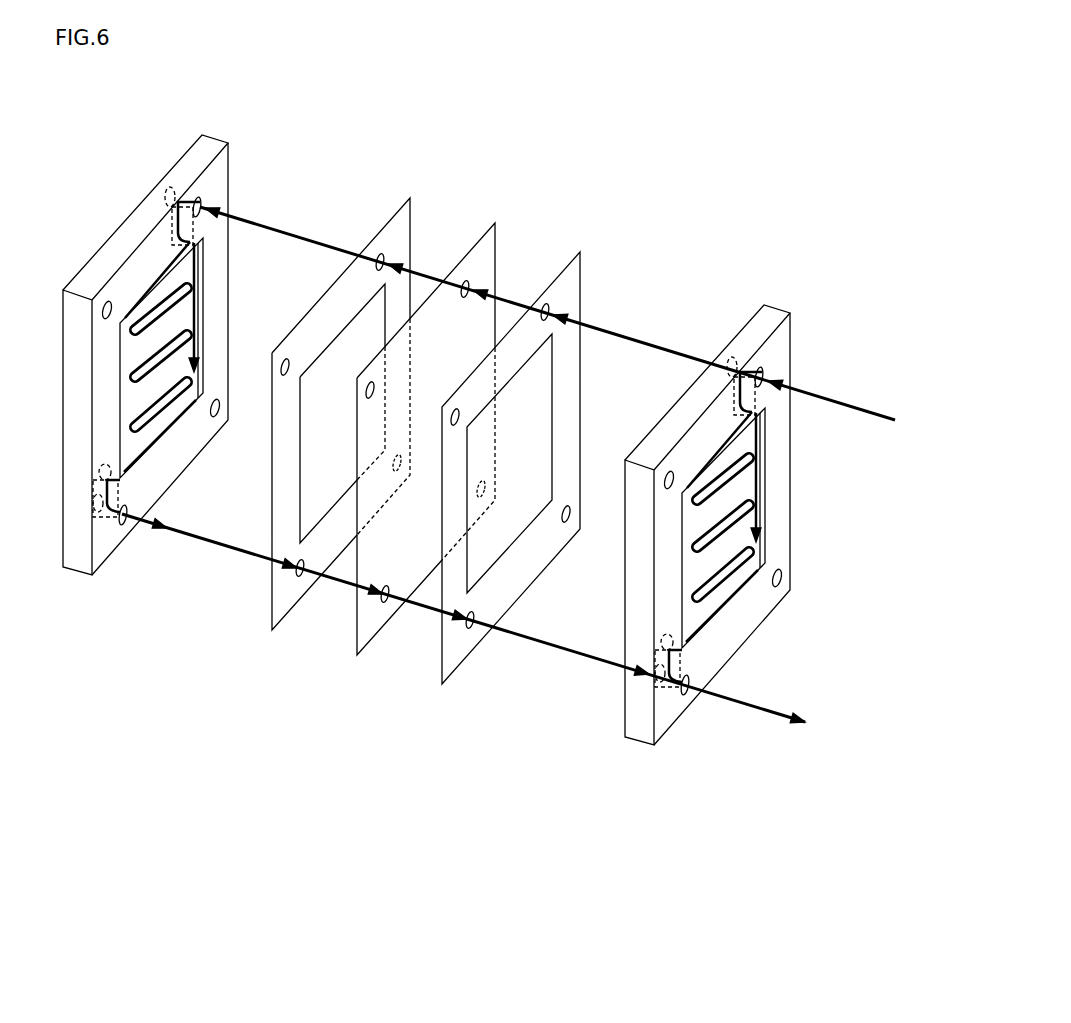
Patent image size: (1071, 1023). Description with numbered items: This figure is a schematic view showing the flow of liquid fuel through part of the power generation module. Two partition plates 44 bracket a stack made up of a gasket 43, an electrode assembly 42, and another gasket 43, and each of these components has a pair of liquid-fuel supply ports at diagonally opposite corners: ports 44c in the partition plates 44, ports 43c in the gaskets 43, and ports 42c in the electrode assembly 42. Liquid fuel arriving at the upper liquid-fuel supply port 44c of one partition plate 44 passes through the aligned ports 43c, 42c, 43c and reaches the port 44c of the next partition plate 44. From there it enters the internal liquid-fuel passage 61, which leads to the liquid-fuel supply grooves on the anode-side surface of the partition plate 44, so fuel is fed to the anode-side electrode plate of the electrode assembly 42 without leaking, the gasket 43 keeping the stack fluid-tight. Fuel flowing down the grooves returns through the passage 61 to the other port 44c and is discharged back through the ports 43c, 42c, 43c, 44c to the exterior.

The electrode assembly 42 is at (357, 655).
The liquid-fuel supply port 42c is at (472, 288).
The gasket 43 is at (272, 590).
The liquid-fuel supply port 43c is at (388, 259).
The partition plate 44 is at (70, 553).
The liquid-fuel supply port 44c is at (205, 205).
The liquid-fuel passage 61 is at (200, 223).